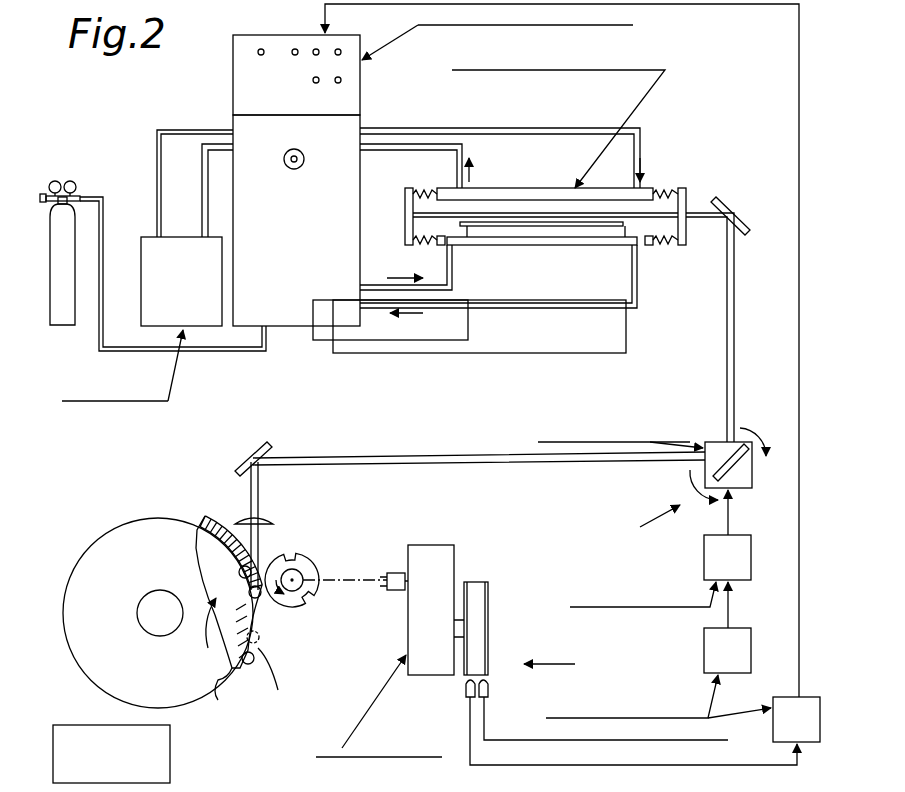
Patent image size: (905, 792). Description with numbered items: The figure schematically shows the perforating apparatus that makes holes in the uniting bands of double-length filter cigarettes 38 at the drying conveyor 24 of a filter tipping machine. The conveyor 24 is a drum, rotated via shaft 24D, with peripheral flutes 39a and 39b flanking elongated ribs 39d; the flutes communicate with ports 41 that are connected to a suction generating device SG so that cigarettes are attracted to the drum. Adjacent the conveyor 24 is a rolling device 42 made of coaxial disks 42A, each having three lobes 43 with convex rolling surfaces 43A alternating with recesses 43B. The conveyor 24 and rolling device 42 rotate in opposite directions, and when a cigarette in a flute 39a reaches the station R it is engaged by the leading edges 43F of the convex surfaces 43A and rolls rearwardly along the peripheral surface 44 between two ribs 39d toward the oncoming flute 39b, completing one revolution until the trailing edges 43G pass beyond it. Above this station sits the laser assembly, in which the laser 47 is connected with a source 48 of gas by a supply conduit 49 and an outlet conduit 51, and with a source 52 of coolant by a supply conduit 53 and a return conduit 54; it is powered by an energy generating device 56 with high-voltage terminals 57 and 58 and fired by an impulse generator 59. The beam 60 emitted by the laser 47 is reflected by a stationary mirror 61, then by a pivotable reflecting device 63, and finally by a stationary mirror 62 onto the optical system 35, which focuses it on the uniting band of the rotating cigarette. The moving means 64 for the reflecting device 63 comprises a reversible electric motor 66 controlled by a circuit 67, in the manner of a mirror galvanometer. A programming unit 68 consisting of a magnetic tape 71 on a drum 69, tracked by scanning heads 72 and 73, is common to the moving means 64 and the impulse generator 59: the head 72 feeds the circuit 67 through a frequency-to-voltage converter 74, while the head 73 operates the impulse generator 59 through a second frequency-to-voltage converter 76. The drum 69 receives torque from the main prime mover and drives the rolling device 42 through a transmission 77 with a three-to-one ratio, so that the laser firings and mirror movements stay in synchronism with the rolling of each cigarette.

The drying conveyor 24 is at (144, 572).
The shaft 24D is at (160, 636).
The optical system 35 is at (246, 520).
The filter cigarette of double unit length 38 is at (251, 667).
The flute 39a is at (210, 520).
The flute 39b is at (218, 700).
The rib 39d is at (278, 690).
The port 41 is at (205, 540).
The rolling device 42 is at (303, 609).
The disk 42A is at (312, 572).
The lobe 43 is at (286, 608).
The convex rolling surface 43A is at (312, 560).
The recess 43B is at (289, 560).
The trailing edge 43G is at (308, 556).
The leading edge 43F is at (312, 600).
The peripheral surface 44 is at (233, 674).
The laser 47 is at (575, 247).
The source of gas 48 is at (60, 326).
The supply conduit 49 is at (445, 262).
The outlet conduit 51 is at (515, 308).
The source of coolant 52 is at (194, 277).
The supply conduit 53 is at (538, 128).
The return conduit 54 is at (466, 150).
The energy generating device 56 is at (308, 224).
The high-voltage terminal 57 is at (418, 340).
The high-voltage terminal 58 is at (612, 353).
The impulse generator 59 is at (352, 92).
The beam 60 is at (736, 326).
The mirror 61 is at (725, 200).
The mirror 62 is at (262, 446).
The beam reflecting device 63 is at (752, 470).
The moving means 64 is at (642, 528).
The electric motor 66 is at (745, 488).
The circuit 67 is at (714, 557).
The programming unit 68 is at (562, 662).
The drum 69 is at (488, 630).
The magnetic tape 71 is at (484, 610).
The scanning head 72 is at (492, 690).
The scanning head 73 is at (466, 692).
The frequency-to-voltage converter 74 is at (708, 660).
The frequency-to-voltage converter 76 is at (778, 722).
The transmission 77 is at (432, 545).
The station R is at (237, 547).
The suction generating device SG is at (170, 764).